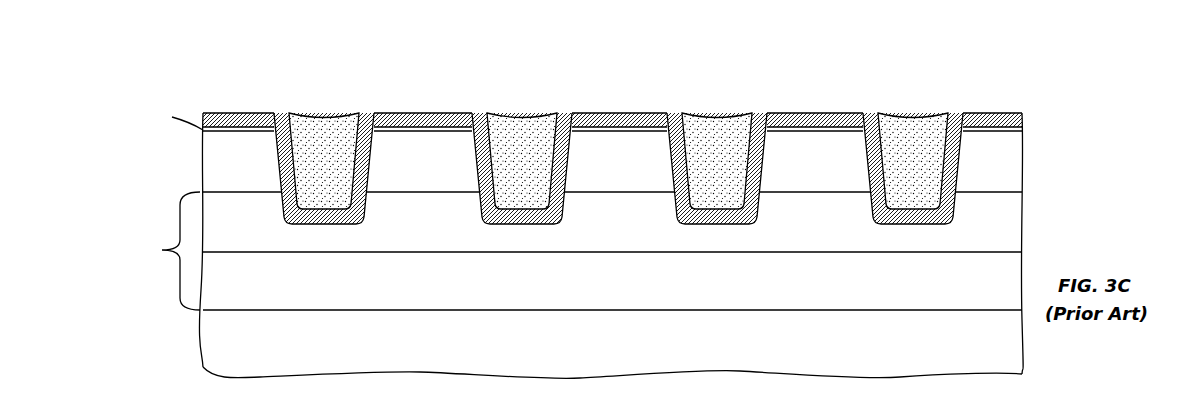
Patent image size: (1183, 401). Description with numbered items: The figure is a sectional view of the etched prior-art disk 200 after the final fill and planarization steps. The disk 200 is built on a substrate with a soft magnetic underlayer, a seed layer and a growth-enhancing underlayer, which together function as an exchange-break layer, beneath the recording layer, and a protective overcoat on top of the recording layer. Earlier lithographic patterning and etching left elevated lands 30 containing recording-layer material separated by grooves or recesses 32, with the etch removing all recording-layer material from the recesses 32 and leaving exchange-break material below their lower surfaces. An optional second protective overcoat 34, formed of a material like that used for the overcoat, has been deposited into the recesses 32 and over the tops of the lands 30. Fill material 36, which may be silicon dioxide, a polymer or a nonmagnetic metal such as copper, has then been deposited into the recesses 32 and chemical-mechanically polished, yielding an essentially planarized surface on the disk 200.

The disk 200 is at (216, 56).
The elevated lands 30 is at (244, 114).
The recesses 32 is at (330, 226).
The second protective overcoat 34 is at (222, 114).
The fill material 36 is at (320, 143).